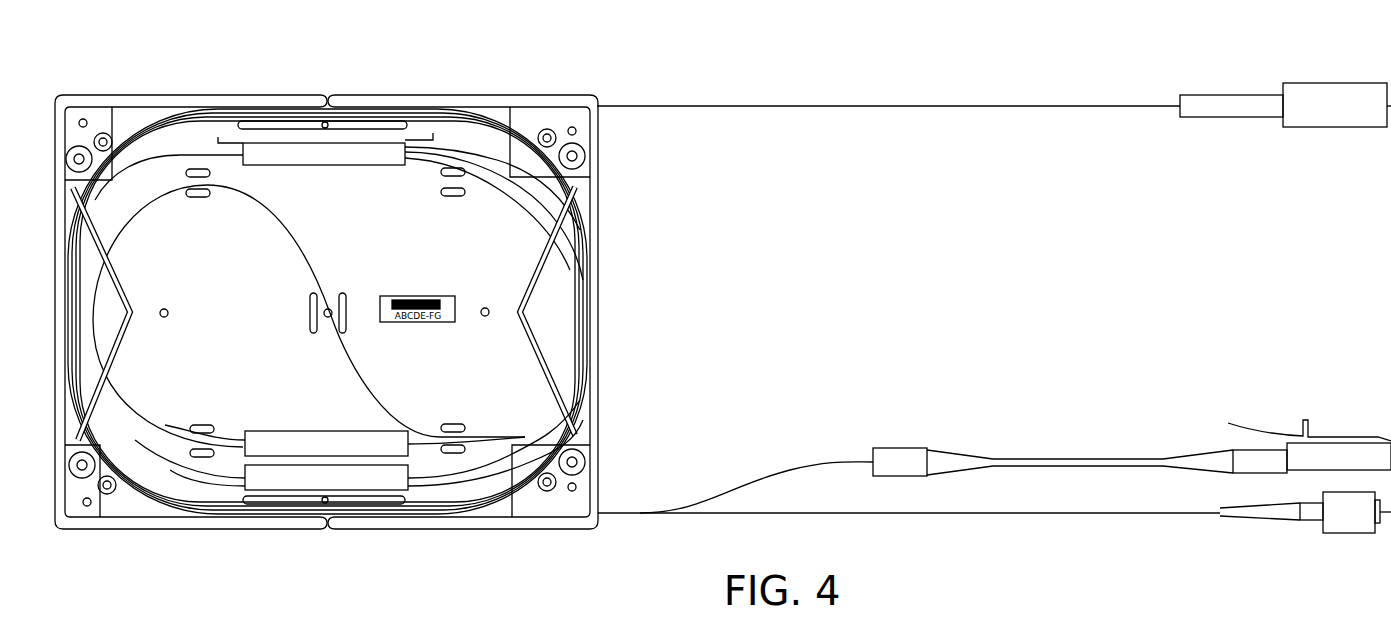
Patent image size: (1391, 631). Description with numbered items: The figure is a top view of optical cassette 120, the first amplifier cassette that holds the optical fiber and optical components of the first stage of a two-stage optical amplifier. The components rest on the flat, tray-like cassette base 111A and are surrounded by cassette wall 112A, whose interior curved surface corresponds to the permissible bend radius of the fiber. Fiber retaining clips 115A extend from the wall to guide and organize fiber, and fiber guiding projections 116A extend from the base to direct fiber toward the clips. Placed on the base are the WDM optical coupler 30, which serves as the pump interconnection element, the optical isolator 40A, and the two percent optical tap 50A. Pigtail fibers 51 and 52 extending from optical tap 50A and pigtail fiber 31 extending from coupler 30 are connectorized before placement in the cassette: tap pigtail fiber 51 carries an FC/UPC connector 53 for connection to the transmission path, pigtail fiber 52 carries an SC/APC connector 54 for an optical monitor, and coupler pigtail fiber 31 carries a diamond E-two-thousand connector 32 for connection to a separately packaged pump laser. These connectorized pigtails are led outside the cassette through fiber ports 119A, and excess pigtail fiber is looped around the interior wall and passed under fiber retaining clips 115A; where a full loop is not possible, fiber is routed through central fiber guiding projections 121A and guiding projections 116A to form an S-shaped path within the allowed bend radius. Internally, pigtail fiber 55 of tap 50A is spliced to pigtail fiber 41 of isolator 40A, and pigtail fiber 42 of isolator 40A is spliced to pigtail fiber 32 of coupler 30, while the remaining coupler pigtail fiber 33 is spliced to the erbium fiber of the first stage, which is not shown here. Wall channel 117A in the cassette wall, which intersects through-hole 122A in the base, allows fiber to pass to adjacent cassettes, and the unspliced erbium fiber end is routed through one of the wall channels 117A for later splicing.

The cassette wall 112A is at (121, 106).
The wall channel 117A is at (325, 100).
The pigtail fiber of 980/1550 optical coupler 33 is at (177, 158).
The 980/1550 WDM optical coupler 30 is at (385, 138).
The pigtail fiber 31 is at (450, 140).
The diamond E2000 connector 32 is at (484, 150).
The fiber port 119A is at (597, 107).
The cassette base 111A is at (212, 259).
The central fiber guiding projections 121A is at (344, 303).
The fiber retaining clip 115A is at (132, 334).
The fiber guiding projection 116A is at (204, 426).
The optical isolator 40A is at (260, 438).
The 2% optical tap 50A is at (275, 487).
The pigtail fiber of optical isolator 41 is at (137, 447).
The pigtail fiber 52 is at (180, 468).
The optical tap pigtail fiber 51 is at (220, 468).
The pigtail fiber of 2% tap 55 is at (420, 466).
The pigtail fiber of optical isolator 42 is at (440, 482).
The SC/APC connector 54 is at (1331, 90).
The FC/UPC connector 53 is at (1353, 534).
The optical cassette 120 is at (497, 575).
The through-hole 122A is at (900, 623).